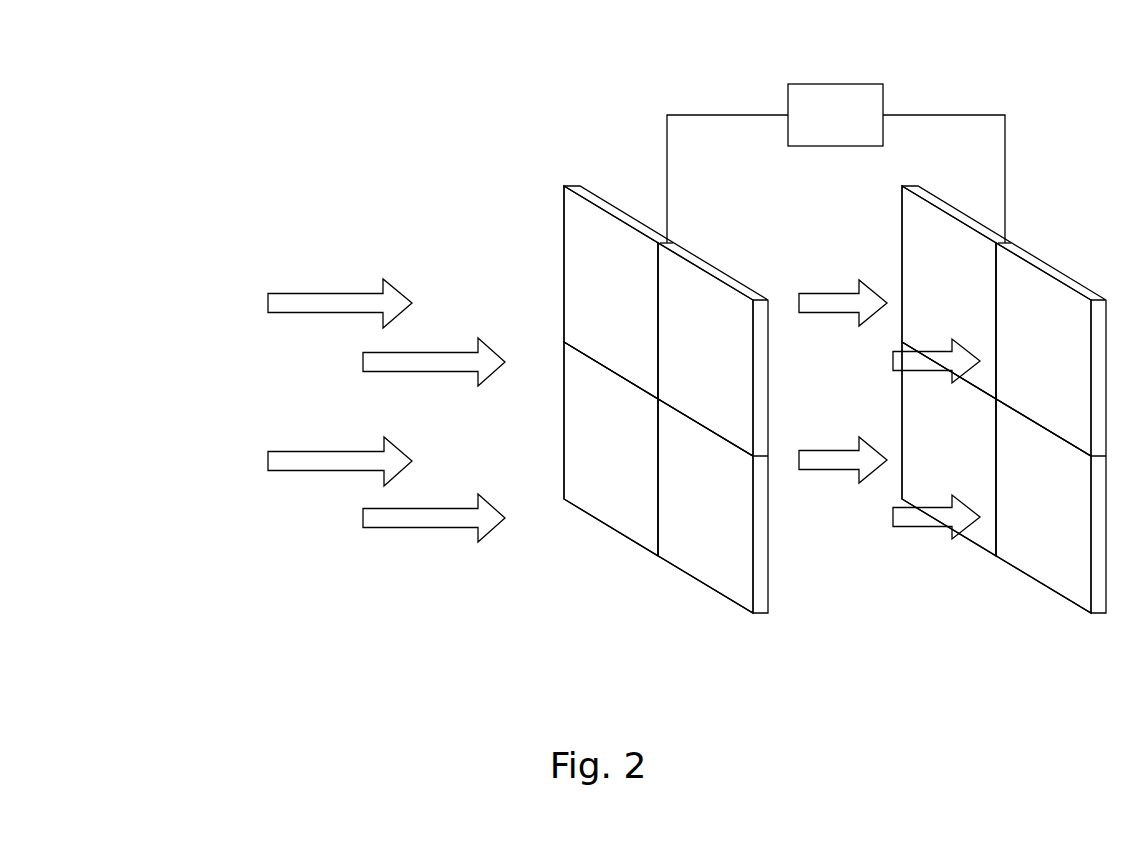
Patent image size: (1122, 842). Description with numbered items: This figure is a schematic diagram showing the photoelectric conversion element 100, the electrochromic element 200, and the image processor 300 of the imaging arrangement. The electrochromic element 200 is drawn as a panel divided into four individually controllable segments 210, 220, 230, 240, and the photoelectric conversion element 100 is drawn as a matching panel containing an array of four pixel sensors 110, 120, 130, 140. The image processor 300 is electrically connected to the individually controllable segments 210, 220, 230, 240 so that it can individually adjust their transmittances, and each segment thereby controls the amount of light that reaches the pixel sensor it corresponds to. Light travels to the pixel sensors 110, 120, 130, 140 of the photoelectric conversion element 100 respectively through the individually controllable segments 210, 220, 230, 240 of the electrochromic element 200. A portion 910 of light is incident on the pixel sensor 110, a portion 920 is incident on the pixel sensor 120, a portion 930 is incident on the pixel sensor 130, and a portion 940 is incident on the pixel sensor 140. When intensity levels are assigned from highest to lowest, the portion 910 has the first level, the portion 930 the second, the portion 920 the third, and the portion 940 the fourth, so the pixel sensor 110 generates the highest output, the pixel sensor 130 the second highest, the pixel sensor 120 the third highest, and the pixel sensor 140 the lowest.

The photoelectric conversion element 100 is at (1050, 268).
The pixel sensor 110 is at (970, 306).
The pixel sensor 120 is at (1065, 363).
The pixel sensor 130 is at (970, 463).
The pixel sensor 140 is at (1065, 518).
The electrochromic element 200 is at (632, 222).
The individually controllable segment 210 is at (591, 306).
The individually controllable segment 220 is at (684, 363).
The individually controllable segment 230 is at (591, 463).
The individually controllable segment 240 is at (684, 518).
The image processor 300 is at (835, 107).
The portion of light 910 is at (282, 303).
The portion of light 920 is at (377, 362).
The portion of light 930 is at (282, 461).
The portion of light 940 is at (377, 518).